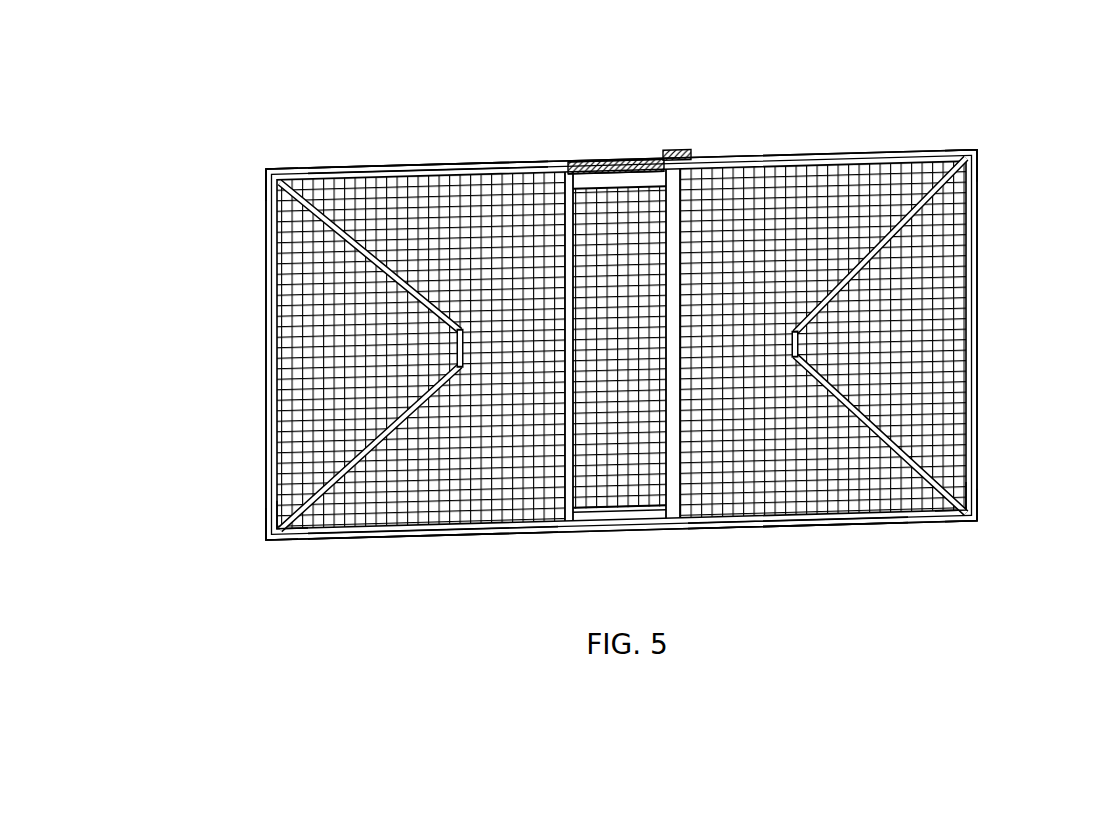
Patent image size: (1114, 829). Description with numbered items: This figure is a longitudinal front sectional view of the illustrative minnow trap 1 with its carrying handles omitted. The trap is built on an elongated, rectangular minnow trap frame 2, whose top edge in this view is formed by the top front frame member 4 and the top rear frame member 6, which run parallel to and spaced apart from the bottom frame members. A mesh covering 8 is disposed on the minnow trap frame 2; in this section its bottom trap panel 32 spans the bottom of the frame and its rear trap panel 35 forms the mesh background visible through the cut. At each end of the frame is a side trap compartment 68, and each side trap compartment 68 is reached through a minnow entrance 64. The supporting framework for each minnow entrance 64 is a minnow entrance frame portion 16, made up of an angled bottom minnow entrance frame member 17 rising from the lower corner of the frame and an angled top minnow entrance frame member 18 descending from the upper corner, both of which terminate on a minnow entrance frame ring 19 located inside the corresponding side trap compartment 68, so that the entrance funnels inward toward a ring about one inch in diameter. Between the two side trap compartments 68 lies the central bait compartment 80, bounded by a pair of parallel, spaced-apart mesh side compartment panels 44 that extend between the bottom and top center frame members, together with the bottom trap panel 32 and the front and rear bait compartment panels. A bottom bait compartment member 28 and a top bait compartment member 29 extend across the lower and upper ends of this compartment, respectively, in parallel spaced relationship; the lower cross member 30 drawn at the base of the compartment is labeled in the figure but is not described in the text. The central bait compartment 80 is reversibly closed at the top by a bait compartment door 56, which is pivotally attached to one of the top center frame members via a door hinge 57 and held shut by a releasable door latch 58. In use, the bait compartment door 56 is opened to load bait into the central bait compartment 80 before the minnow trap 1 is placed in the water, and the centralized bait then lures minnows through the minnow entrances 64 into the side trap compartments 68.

The minnow trap 1 is at (270, 72).
The minnow trap frame 2 is at (366, 540).
The top front frame member 4 is at (773, 517).
The top rear frame member 6 is at (428, 160).
The mesh covering 8 is at (419, 532).
The minnow entrance frame portion 16 is at (320, 459).
The bottom minnow entrance frame member 17 is at (320, 473).
The top minnow entrance frame member 18 is at (316, 168).
The minnow entrance frame ring 19 is at (440, 352).
The bottom bait compartment member 28 is at (648, 507).
The top bait compartment member 29 is at (607, 155).
The lower cross member 30 is at (583, 503).
The bottom trap panel 32 is at (487, 520).
The rear trap panel 35 is at (823, 453).
The mesh side compartment panel 44 is at (556, 520).
The bait compartment door 56 is at (613, 153).
The door hinge 57 is at (563, 157).
The releasable door latch 58 is at (680, 147).
The minnow entrance 64 is at (256, 238).
The side trap compartment 68 is at (377, 197).
The central bait compartment 80 is at (586, 208).